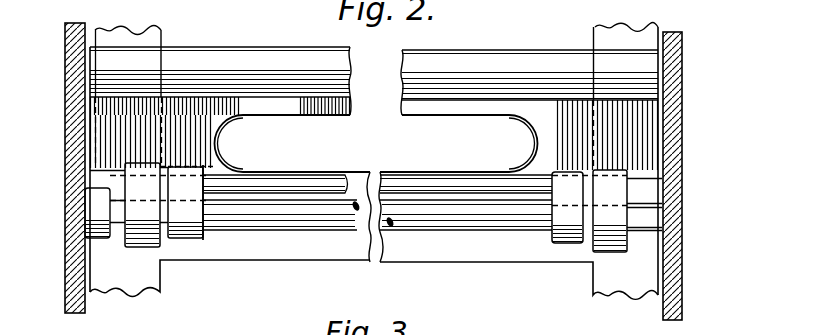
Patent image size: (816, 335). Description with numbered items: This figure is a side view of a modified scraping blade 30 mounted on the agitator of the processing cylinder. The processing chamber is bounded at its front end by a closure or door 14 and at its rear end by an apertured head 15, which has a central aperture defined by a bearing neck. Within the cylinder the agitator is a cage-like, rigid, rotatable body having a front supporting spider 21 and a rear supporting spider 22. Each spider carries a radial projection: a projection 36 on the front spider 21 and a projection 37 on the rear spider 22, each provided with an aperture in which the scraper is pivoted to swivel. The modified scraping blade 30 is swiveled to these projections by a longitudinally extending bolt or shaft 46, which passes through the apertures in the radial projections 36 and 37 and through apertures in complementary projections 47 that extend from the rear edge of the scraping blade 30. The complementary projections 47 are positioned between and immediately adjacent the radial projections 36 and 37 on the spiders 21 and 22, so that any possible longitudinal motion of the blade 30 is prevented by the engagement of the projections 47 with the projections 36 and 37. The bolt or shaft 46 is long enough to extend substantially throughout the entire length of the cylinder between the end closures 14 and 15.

The apertured head 15 is at (73, 97).
The closure or door 14 is at (679, 118).
The scraping blade 30 is at (258, 54).
The rear supporting spider 22 is at (130, 288).
The front supporting spider 21 is at (622, 285).
The projection 37 is at (153, 228).
The complementary projection 47 is at (197, 225).
The projection 36 is at (617, 250).
The bolt or shaft 46 is at (465, 227).